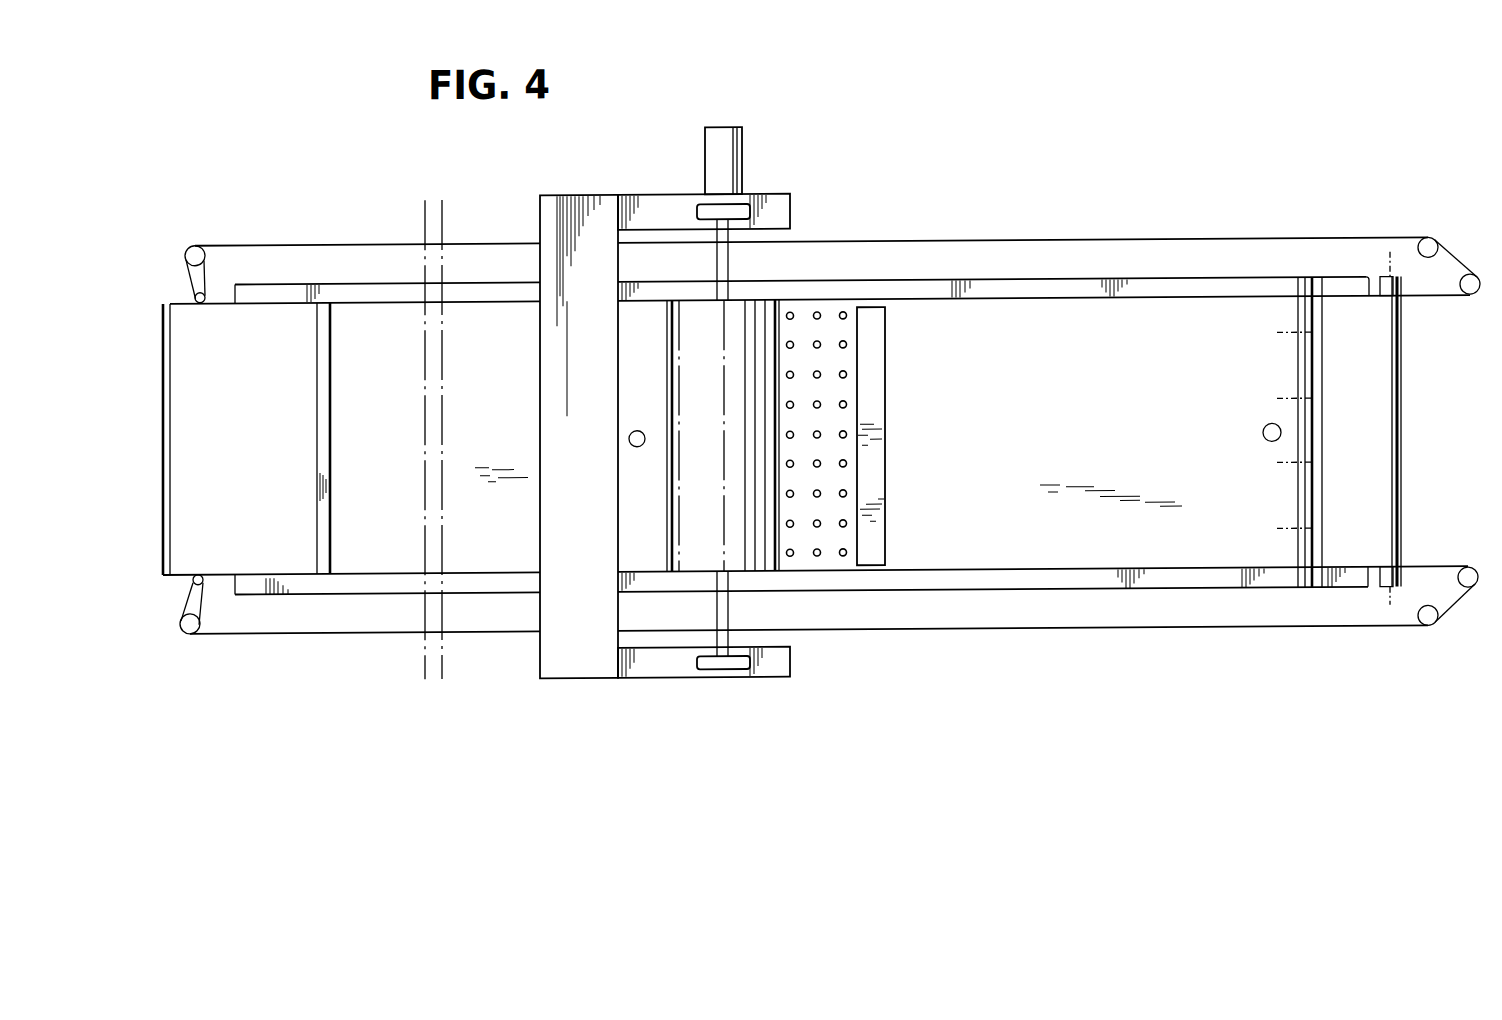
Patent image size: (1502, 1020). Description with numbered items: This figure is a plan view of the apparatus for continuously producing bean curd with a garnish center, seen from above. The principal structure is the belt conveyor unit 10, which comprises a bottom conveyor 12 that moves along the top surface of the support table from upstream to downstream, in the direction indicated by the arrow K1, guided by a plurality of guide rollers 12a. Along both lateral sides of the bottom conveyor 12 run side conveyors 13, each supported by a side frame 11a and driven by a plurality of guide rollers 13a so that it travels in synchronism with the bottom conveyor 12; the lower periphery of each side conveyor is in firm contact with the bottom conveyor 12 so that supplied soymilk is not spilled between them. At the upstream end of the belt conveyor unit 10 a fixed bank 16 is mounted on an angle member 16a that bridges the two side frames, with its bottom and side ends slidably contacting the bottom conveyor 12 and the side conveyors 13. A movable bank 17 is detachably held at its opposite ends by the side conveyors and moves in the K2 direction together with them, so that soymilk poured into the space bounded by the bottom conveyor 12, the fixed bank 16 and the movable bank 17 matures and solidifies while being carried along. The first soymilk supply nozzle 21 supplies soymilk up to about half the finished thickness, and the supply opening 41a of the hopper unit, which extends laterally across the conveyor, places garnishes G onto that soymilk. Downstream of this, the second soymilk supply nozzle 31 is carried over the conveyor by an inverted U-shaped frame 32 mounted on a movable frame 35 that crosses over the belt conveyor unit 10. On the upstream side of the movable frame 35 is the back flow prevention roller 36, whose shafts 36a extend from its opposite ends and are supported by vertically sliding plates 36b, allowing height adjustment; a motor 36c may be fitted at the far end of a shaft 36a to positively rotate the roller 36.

The belt conveyor unit 10 is at (1403, 393).
The side frame 11a is at (1150, 288).
The bottom conveyor 12 is at (1394, 452).
The guide rollers 12a is at (1382, 584).
The side conveyors 13 is at (1428, 302).
The guide rollers 13a is at (190, 244).
The fixed bank 16 is at (1297, 321).
The angle member 16a is at (1318, 494).
The movable bank 17 is at (334, 384).
The first soymilk supply nozzle 21 is at (1264, 440).
The second soymilk supply nozzle 31 is at (645, 437).
The frame 32 is at (550, 431).
The movable frame 35 is at (648, 210).
The back flow prevention roller 36 is at (680, 504).
The shaft 36a is at (730, 258).
The sliding plate 36b is at (748, 210).
The motor 36c is at (746, 153).
The supply opening 41a is at (876, 386).
The garnishes G is at (786, 375).
The direction of conveyor movement K1 is at (1105, 434).
The direction of movable bank movement K2 is at (316, 436).